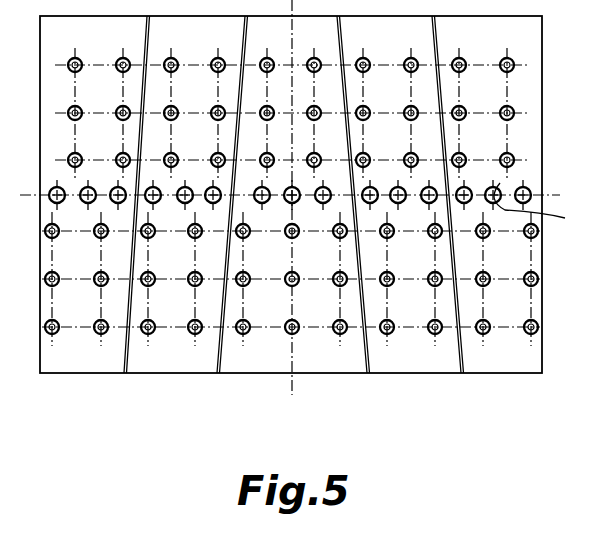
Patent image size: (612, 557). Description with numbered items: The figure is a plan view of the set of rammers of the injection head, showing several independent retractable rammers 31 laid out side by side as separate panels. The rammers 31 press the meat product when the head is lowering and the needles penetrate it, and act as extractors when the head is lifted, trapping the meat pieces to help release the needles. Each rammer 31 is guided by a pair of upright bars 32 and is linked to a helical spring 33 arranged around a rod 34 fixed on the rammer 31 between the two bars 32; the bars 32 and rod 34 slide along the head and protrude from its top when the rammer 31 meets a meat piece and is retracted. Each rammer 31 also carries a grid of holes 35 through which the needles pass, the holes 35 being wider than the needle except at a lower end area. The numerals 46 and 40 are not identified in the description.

The retractable rammer 31 is at (178, 363).
The upright guiding bar 32 is at (530, 192).
The helical spring 33 is at (495, 189).
The rod 34 is at (549, 211).
The hole 35 is at (385, 335).
The bolt head 46 is at (394, 335).
The plate segment 40 is at (368, 194).